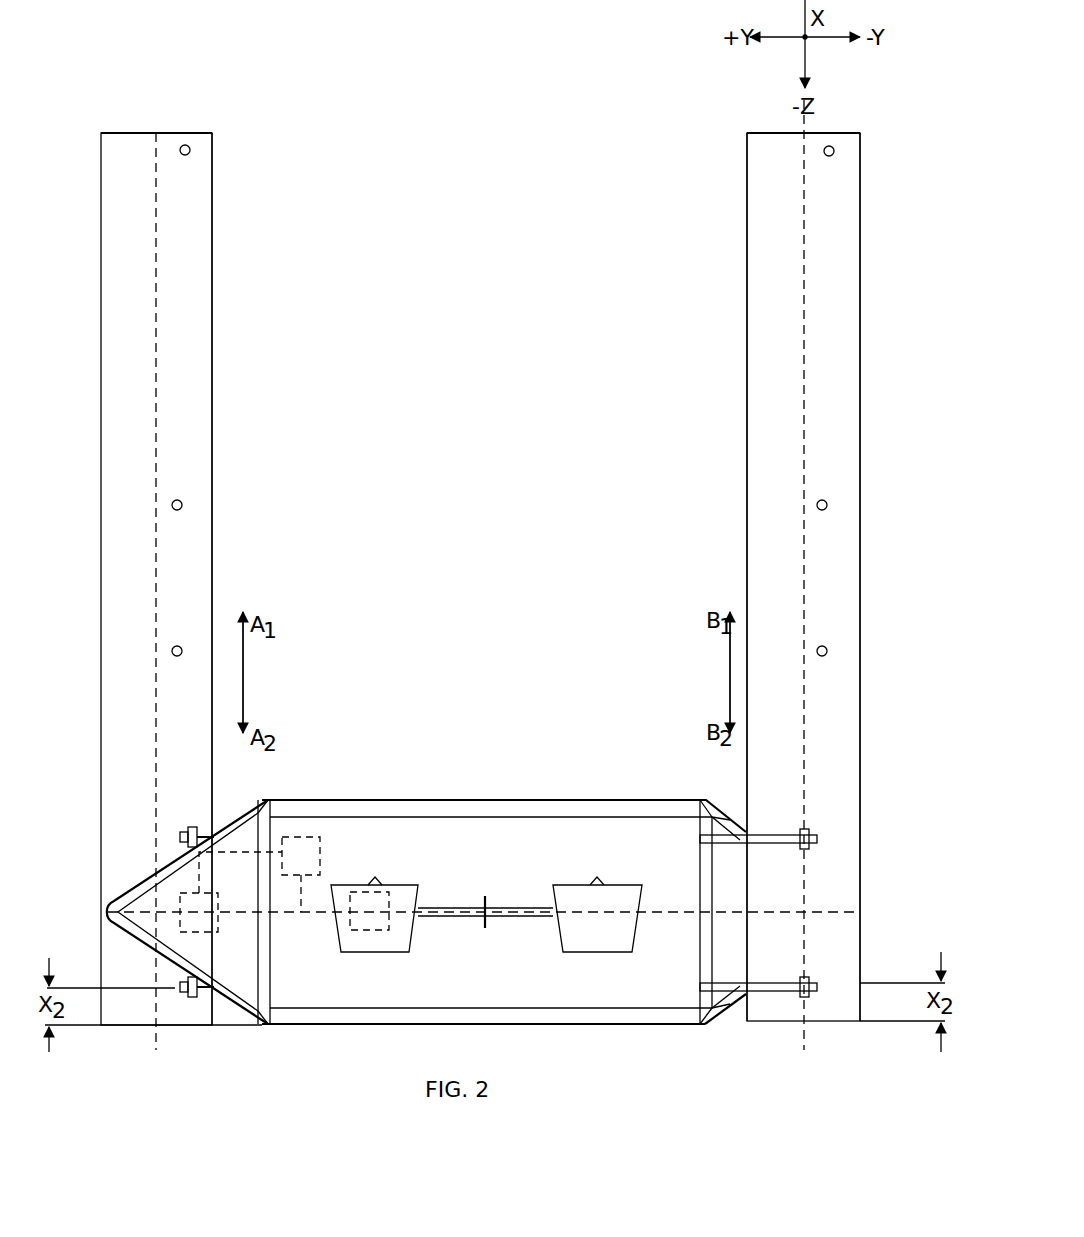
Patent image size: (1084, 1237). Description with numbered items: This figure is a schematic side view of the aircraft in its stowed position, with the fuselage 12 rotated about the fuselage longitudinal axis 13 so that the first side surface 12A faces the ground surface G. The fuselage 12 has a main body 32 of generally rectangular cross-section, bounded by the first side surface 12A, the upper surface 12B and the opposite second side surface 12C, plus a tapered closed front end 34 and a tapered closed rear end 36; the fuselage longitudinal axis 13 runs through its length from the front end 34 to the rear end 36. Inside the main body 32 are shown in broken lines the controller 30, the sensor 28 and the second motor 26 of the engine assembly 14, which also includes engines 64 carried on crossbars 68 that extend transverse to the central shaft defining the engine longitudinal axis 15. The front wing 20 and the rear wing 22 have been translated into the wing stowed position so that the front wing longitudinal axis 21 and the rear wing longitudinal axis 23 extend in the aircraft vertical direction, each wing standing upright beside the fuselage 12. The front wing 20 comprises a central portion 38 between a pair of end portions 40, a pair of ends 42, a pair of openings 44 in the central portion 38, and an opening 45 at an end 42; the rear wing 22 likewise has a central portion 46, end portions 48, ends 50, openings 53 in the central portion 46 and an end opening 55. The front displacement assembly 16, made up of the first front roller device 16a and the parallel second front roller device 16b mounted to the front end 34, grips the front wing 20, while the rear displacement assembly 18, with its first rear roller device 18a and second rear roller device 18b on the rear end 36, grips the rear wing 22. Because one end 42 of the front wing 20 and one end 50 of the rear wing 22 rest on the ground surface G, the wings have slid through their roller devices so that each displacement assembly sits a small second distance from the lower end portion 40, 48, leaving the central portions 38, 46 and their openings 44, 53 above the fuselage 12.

The fuselage 12 is at (483, 936).
The first side surface 12A is at (622, 1024).
The upper surface 12B is at (605, 832).
The second side surface 12C is at (538, 800).
The fuselage longitudinal axis 13 is at (410, 897).
The engine assembly 14 is at (330, 932).
The engine longitudinal axis 15 is at (488, 918).
The front displacement assembly 16 is at (173, 945).
The first front roller device 16a is at (187, 826).
The second front roller device 16b is at (187, 998).
The rear displacement assembly 18 is at (777, 958).
The first rear roller device 18a is at (777, 845).
The second rear roller device 18b is at (780, 980).
The front wing 20 is at (100, 315).
The front wing longitudinal axis 21 is at (156, 1040).
The rear wing 22 is at (862, 330).
The rear wing longitudinal axis 23 is at (806, 762).
The second motor 26 is at (389, 924).
The sensor 28 is at (212, 932).
The controller 30 is at (320, 860).
The main body 32 is at (485, 800).
The front end 34 is at (245, 812).
The rear end 36 is at (725, 815).
The central portion 38 is at (212, 568).
The end portions 40 is at (112, 140).
The ends 42 is at (156, 133).
The openings 44 is at (177, 510).
The opening 45 is at (185, 145).
The central portion 46 is at (748, 566).
The end portions 48 is at (750, 186).
The ends 50 is at (767, 133).
The openings 53 is at (822, 510).
The second post top opening 55 is at (829, 146).
The engines 64 is at (375, 952).
The crossbars 68 is at (520, 906).
The ground surface G is at (60, 1025).